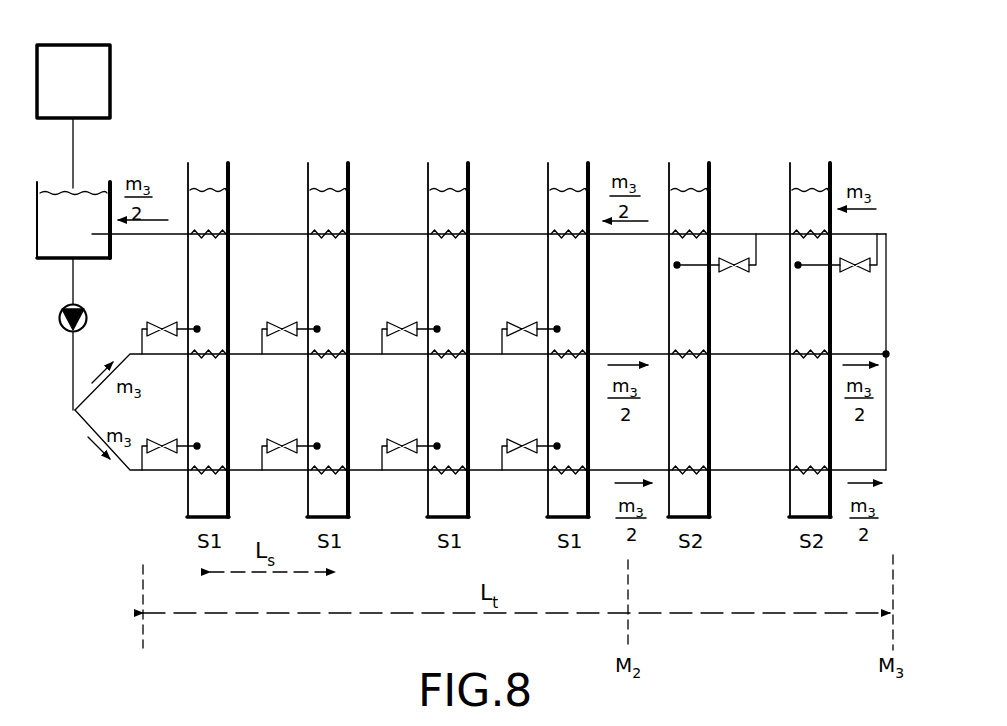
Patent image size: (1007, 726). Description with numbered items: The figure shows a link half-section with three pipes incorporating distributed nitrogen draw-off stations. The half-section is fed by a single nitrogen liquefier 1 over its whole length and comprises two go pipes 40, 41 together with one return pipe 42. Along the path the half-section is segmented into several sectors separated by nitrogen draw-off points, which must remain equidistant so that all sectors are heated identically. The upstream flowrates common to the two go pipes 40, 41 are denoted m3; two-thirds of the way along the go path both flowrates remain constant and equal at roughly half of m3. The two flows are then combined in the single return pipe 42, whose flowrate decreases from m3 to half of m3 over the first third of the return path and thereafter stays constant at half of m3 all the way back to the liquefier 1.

The nitrogen liquefier 1 is at (112, 82).
The go pipe 40 is at (248, 352).
The go pipe 41 is at (246, 470).
The return pipe 42 is at (272, 234).